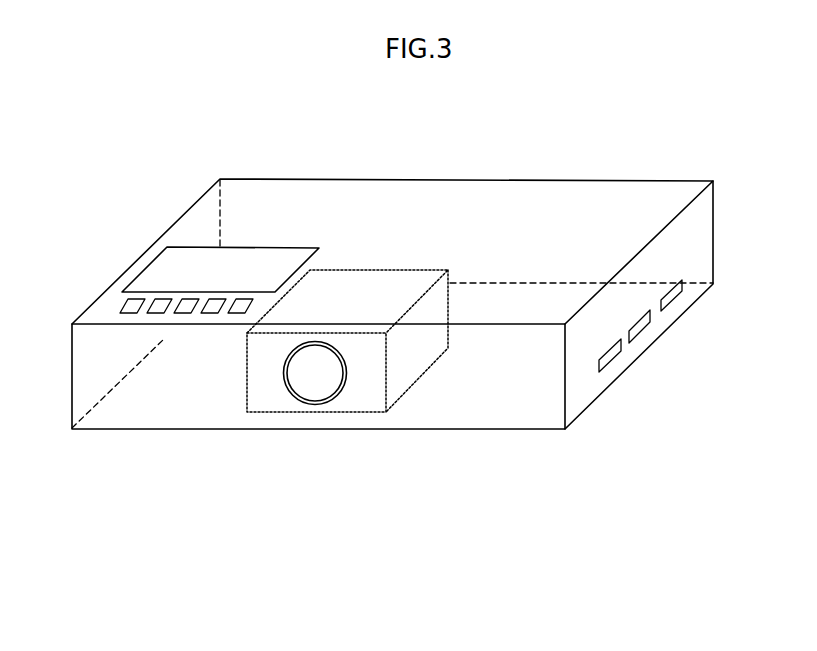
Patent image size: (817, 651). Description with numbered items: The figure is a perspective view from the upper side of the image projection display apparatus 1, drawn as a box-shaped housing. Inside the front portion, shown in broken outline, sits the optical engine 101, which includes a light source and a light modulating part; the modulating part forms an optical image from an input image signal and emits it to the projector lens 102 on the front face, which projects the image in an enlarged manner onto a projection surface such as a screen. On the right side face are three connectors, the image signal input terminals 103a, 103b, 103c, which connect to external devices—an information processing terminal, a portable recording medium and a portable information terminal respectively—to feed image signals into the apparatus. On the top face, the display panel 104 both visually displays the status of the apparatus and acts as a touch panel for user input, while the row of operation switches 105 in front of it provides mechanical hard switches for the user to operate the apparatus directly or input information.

The image projection display apparatus 1 is at (464, 180).
The optical engine 101 is at (377, 270).
The projector lens 102 is at (346, 372).
The image signal input terminal 103a is at (682, 288).
The image signal input terminal 103b is at (651, 318).
The image signal input terminal 103c is at (621, 346).
The display panel 104 is at (240, 247).
The operation switches 105 is at (235, 313).